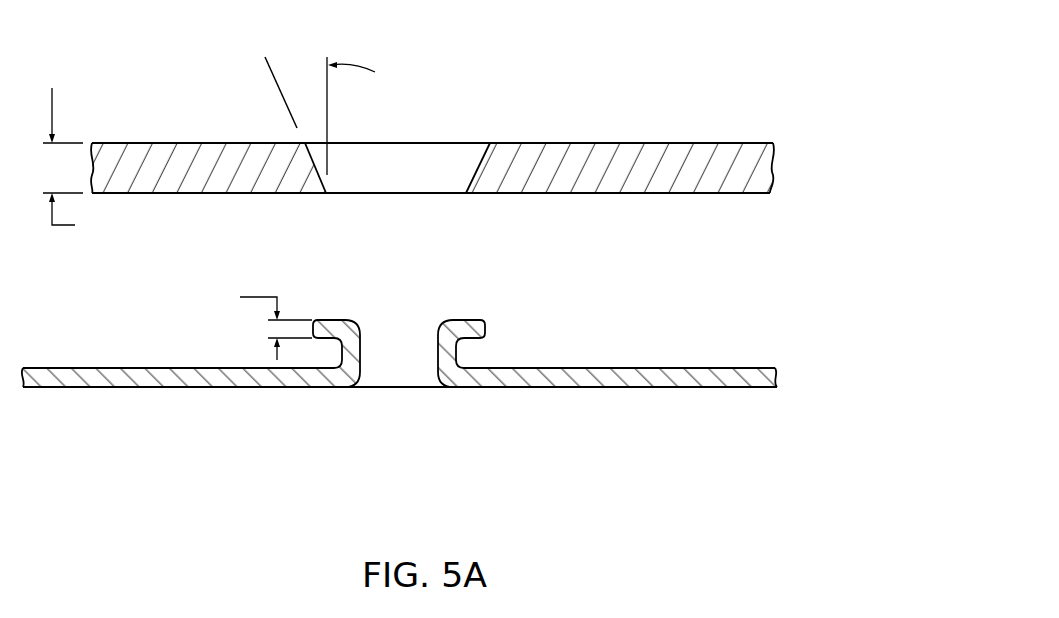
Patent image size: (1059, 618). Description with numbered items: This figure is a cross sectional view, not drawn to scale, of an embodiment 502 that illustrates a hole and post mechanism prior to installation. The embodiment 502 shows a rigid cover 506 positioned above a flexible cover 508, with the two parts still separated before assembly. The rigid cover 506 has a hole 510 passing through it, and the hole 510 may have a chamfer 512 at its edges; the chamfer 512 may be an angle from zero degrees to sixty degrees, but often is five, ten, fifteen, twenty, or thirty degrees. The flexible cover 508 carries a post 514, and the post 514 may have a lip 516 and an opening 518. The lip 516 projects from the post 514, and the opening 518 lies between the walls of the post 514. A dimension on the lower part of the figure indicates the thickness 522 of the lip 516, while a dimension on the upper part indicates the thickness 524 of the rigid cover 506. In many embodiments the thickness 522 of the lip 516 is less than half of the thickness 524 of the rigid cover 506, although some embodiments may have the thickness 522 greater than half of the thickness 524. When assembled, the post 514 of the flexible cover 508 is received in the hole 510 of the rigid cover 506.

The embodiment 502 is at (610, 430).
The rigid cover 506 is at (699, 143).
The flexible cover 508 is at (120, 388).
The hole 510 is at (456, 155).
The chamfer 512 is at (262, 72).
The post 514 is at (487, 320).
The lip 516 is at (313, 318).
The opening 518 is at (404, 345).
The thickness 522 is at (224, 322).
The thickness 524 is at (110, 172).